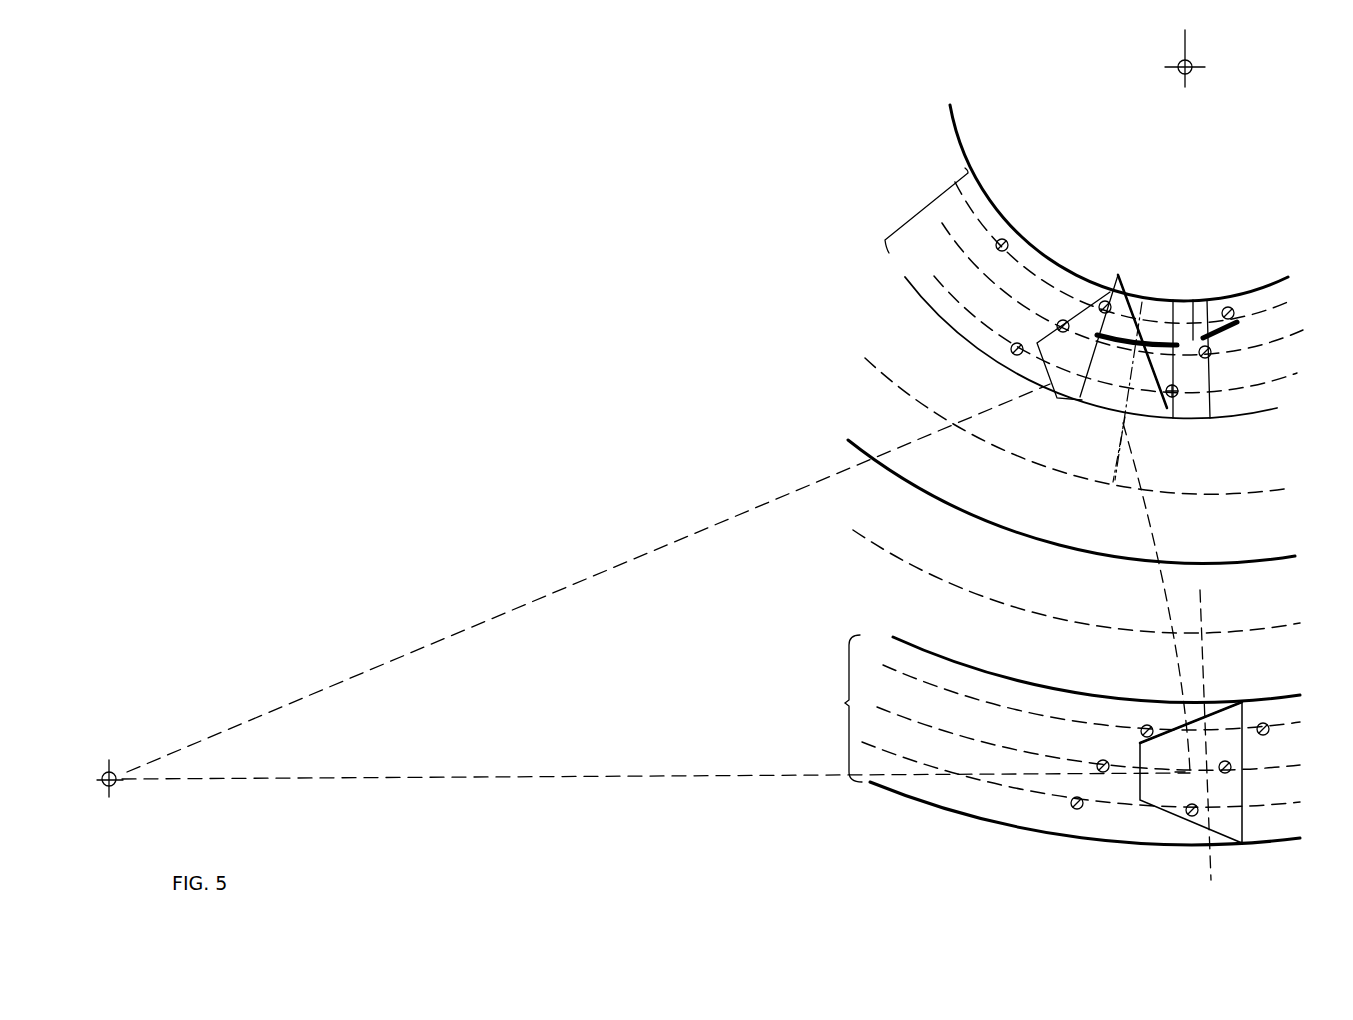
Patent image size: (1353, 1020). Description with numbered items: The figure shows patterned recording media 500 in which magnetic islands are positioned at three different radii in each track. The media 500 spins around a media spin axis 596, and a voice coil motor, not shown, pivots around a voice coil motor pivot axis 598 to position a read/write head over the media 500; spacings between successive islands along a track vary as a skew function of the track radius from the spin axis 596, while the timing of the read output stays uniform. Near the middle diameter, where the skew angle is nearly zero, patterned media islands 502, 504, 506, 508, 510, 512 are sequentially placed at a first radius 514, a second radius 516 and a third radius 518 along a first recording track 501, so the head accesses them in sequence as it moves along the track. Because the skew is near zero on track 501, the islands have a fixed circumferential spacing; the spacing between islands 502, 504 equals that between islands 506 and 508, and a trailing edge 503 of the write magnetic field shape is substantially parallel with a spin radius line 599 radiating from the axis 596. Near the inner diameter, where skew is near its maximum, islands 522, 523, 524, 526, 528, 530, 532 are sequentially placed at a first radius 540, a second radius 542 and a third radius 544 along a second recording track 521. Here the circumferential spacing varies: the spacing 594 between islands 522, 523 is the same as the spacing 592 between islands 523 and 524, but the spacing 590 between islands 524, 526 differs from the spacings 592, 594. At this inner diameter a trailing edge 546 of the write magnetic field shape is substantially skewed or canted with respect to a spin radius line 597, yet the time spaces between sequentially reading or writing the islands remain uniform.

The patterned recording media 500 is at (712, 335).
The first recording track 501 is at (845, 703).
The patterned media island 502 is at (1265, 733).
The trailing edge of write magnetic field shape 503 is at (1242, 702).
The patterned media island 504 is at (1228, 773).
The patterned media island 506 is at (1198, 813).
The patterned media island 508 is at (1141, 731).
The patterned media island 510 is at (1097, 766).
The patterned media island 512 is at (1072, 806).
The first radius 514 is at (882, 756).
The second radius 516 is at (917, 722).
The third radius 518 is at (913, 677).
The second recording track 521 is at (927, 200).
The patterned media island 522 is at (1234, 314).
The patterned media island 523 is at (1211, 355).
The patterned media island 524 is at (1177, 398).
The patterned media island 526 is at (1100, 305).
The patterned media island 528 is at (1057, 323).
The patterned media island 530 is at (1017, 344).
The patterned media island 532 is at (998, 241).
The first radius 540 is at (942, 296).
The second radius 542 is at (950, 245).
The third radius 544 is at (948, 172).
The trailing edge of write magnetic field shape 546 is at (1133, 275).
The circumferential spacing 590 is at (1157, 300).
The circumferential spacing 592 is at (1180, 300).
The circumferential spacing 594 is at (1207, 300).
The media spin axis 596 is at (1181, 61).
The spin radius line 597 is at (1117, 462).
The voice coil motor pivot axis 598 is at (105, 771).
The spin radius line 599 is at (1200, 613).